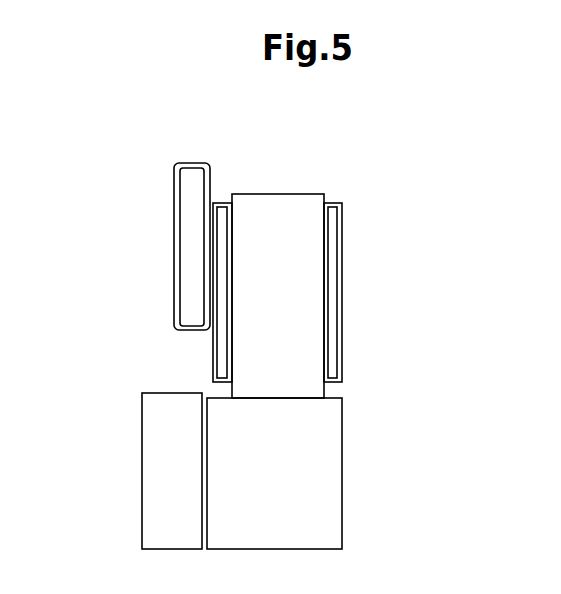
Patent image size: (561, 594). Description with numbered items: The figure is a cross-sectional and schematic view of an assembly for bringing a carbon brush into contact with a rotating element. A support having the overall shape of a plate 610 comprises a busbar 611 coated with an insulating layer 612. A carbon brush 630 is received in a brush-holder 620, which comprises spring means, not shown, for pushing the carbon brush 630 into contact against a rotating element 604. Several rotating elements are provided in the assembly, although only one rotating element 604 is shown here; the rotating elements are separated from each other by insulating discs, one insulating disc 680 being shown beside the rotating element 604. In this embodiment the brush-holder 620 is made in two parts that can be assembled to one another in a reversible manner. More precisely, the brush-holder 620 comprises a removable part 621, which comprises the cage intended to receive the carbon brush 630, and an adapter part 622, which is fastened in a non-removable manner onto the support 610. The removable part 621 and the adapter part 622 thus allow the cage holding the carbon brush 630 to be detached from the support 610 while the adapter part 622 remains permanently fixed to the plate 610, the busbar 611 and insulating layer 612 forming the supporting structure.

The plate 610 is at (194, 141).
The insulating layer 612 is at (183, 164).
The busbar 611 is at (190, 263).
The adapter part 622 is at (212, 200).
The brush-holder 620 is at (361, 211).
The carbon brush 630 is at (310, 257).
The removable part 621 is at (337, 307).
The insulating disc 680 is at (152, 510).
The rotating element 604 is at (323, 500).